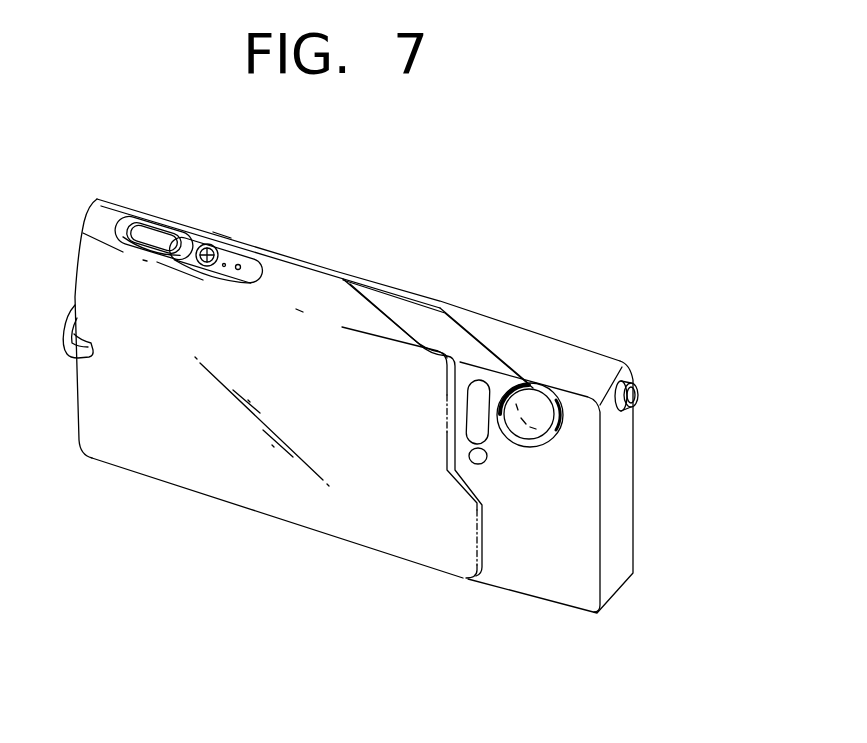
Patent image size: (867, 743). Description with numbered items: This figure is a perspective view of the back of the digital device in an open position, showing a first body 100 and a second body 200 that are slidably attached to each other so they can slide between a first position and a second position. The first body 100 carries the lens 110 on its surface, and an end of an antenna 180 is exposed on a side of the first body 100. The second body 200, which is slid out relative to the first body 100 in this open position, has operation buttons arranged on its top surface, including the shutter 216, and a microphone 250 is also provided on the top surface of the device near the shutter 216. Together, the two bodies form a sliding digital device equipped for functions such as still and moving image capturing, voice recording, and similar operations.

The first body 100 is at (472, 294).
The lens 110 is at (533, 405).
The antenna 180 is at (638, 402).
The second body 200 is at (163, 489).
The shutter 216 is at (152, 232).
The microphone 250 is at (240, 265).